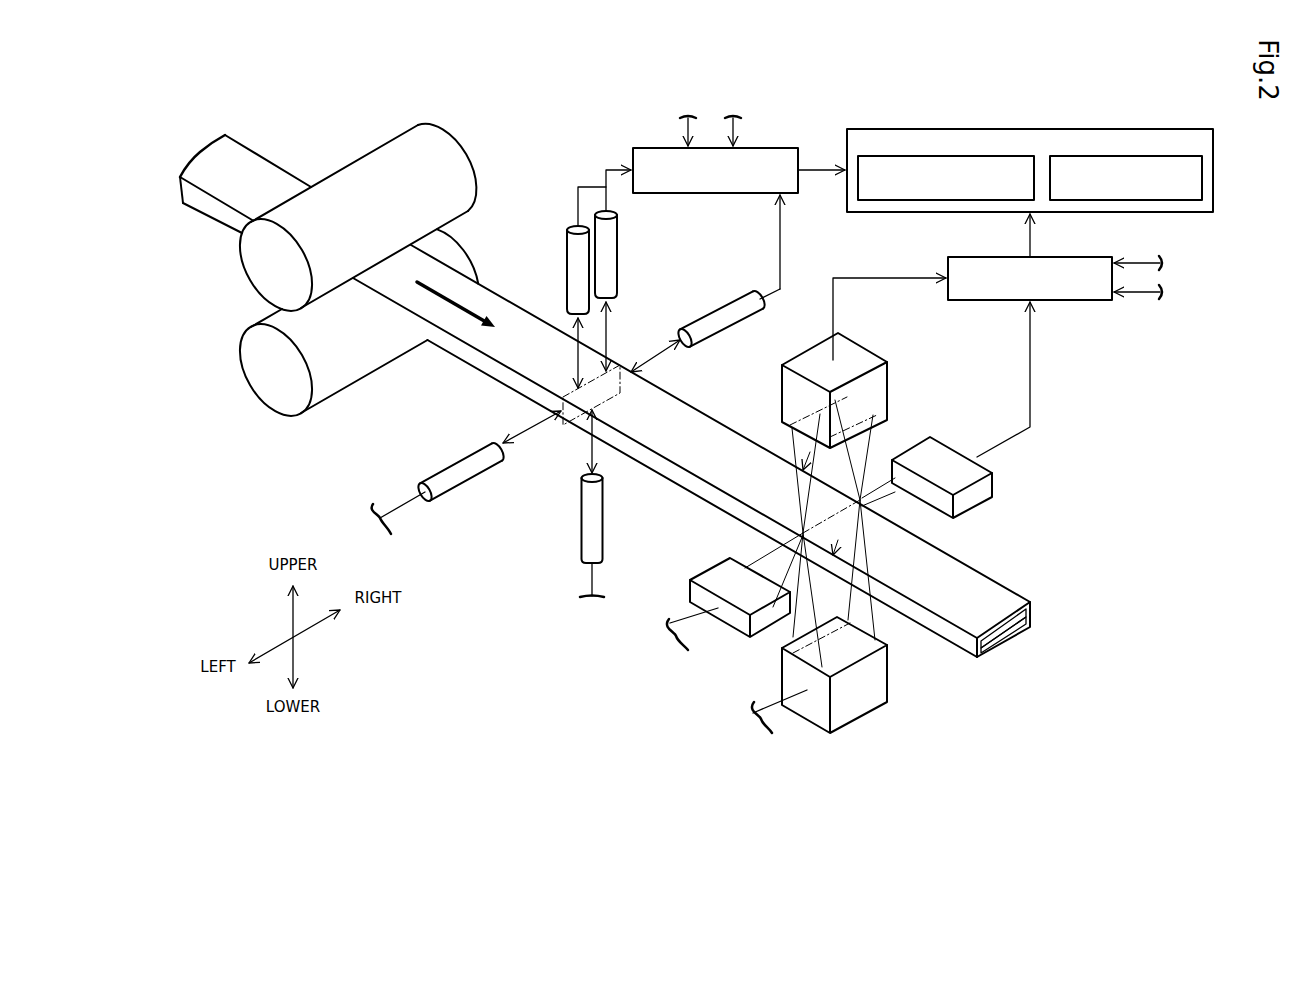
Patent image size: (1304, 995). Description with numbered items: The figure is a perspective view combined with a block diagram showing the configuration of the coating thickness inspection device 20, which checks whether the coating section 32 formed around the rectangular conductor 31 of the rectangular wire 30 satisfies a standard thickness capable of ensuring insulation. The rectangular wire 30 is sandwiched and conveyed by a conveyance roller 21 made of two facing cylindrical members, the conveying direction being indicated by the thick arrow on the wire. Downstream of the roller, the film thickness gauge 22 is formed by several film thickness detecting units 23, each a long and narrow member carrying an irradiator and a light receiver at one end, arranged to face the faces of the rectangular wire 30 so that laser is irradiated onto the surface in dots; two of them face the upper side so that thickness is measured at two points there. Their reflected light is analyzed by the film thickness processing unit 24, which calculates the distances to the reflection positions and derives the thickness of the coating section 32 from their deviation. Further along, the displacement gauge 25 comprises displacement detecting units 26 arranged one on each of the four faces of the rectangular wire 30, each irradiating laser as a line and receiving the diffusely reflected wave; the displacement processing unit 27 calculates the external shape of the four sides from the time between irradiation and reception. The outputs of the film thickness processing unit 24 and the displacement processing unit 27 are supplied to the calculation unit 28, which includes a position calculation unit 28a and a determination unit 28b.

The coating thickness inspection device 20 is at (1215, 103).
The conveyance roller 21 is at (377, 160).
The film thickness gauge 22 is at (602, 146).
The film thickness detecting unit 23 is at (604, 258).
The film thickness processing unit 24 is at (770, 148).
The displacement gauge 25 is at (1204, 281).
The displacement detecting unit 26 is at (813, 353).
The displacement processing unit 27 is at (1092, 253).
The calculation unit 28 is at (1020, 129).
The position calculation unit 28a is at (923, 155).
The determination unit 28b is at (1157, 155).
The rectangular wire 30 is at (1085, 637).
The rectangular conductor 31 is at (1010, 627).
The coating section 32 is at (1000, 645).